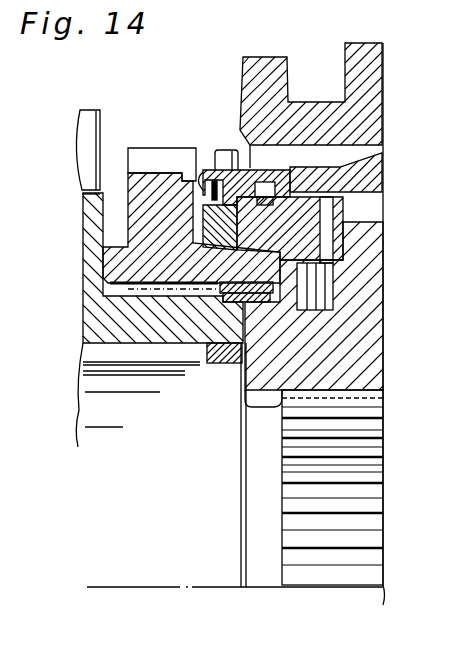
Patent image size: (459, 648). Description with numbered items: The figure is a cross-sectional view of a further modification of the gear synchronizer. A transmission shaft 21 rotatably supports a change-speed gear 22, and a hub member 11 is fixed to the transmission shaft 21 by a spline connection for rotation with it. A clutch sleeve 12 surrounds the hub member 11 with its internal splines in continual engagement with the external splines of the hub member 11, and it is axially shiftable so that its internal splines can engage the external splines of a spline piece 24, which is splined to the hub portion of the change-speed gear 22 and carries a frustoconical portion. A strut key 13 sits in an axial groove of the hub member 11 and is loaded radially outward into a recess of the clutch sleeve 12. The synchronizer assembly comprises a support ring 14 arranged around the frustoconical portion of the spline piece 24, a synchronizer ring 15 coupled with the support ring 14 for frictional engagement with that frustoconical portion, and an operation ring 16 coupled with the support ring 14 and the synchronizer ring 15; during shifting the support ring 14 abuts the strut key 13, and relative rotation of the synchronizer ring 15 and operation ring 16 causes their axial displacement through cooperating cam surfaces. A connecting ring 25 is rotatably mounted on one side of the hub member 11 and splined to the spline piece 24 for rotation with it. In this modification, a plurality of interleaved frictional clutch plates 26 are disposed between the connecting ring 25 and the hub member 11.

The hub member 11 is at (368, 377).
The clutch sleeve 12 is at (375, 107).
The strut key 13 is at (382, 182).
The support ring 14 is at (221, 153).
The synchronizer ring 15 is at (197, 240).
The operation ring 16 is at (250, 257).
The transmission shaft 21 is at (380, 503).
The change-speed gear 22 is at (186, 343).
The spline piece 24 is at (145, 157).
The connecting ring 25 is at (288, 302).
The frictional clutch plates 26 is at (330, 300).